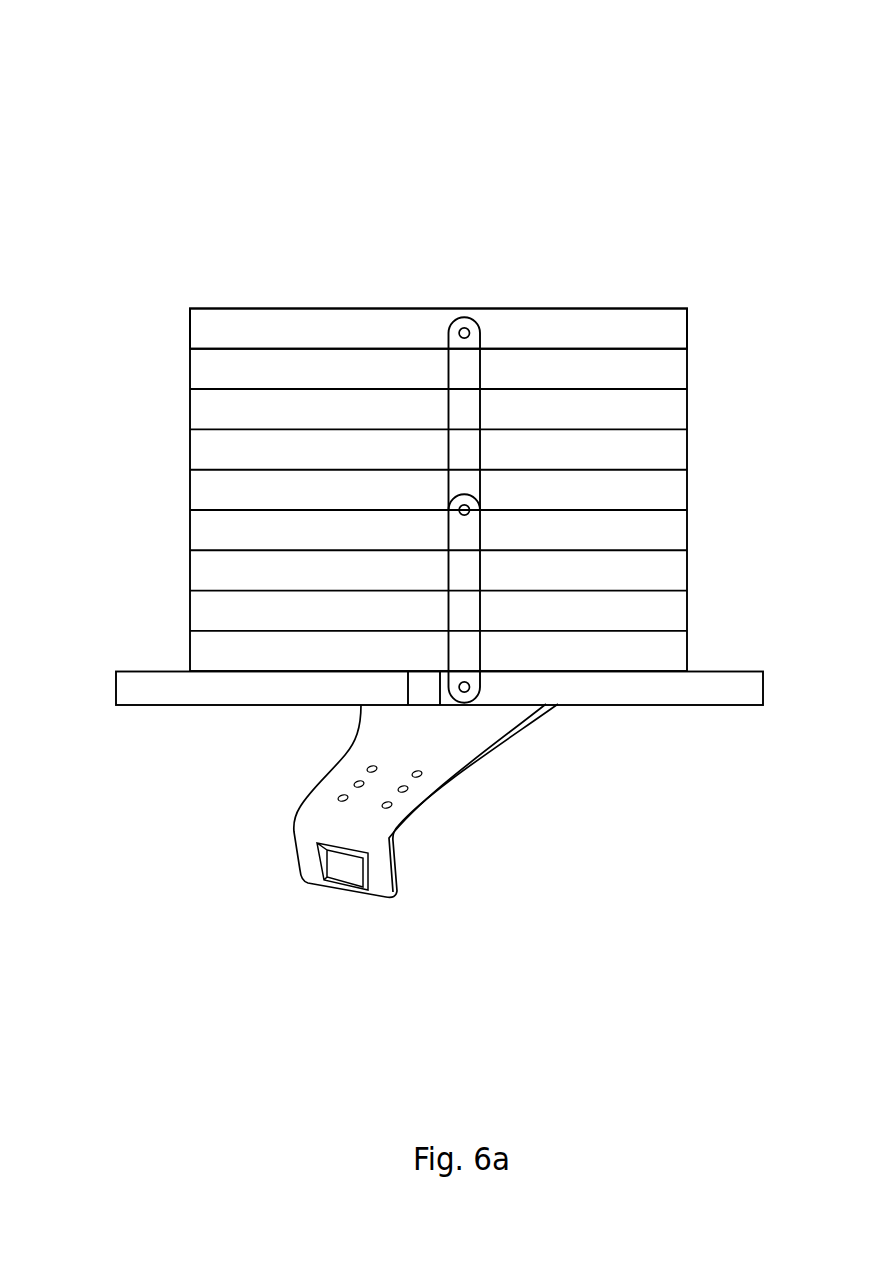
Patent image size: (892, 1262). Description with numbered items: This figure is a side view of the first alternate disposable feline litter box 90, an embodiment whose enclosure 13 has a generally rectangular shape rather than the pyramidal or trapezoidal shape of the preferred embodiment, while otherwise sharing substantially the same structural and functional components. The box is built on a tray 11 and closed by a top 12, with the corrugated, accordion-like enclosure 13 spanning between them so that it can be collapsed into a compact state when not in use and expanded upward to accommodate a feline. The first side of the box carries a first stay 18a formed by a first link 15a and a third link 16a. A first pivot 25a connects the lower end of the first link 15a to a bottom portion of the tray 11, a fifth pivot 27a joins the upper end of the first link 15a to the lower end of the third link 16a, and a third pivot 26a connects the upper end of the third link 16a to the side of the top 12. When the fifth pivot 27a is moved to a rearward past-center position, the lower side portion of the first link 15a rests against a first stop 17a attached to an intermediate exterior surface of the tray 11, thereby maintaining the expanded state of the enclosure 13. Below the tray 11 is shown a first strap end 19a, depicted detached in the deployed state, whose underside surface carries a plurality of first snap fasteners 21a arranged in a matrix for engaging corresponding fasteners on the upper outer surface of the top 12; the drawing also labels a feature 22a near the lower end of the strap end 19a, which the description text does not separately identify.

The first alternate disposable feline litter box 90 is at (112, 105).
The first stay 18a is at (272, 258).
The top 12 is at (628, 308).
The enclosure 13 is at (688, 490).
The third link 16a is at (465, 360).
The first link 15a is at (468, 547).
The third pivot 26a is at (468, 327).
The fifth pivot 27a is at (453, 500).
The first pivot 25a is at (477, 686).
The first stop 17a is at (423, 683).
The tray 11 is at (146, 688).
The first strap end 19a is at (457, 738).
The first snap fasteners 21a is at (343, 798).
The window opening 22a is at (330, 878).